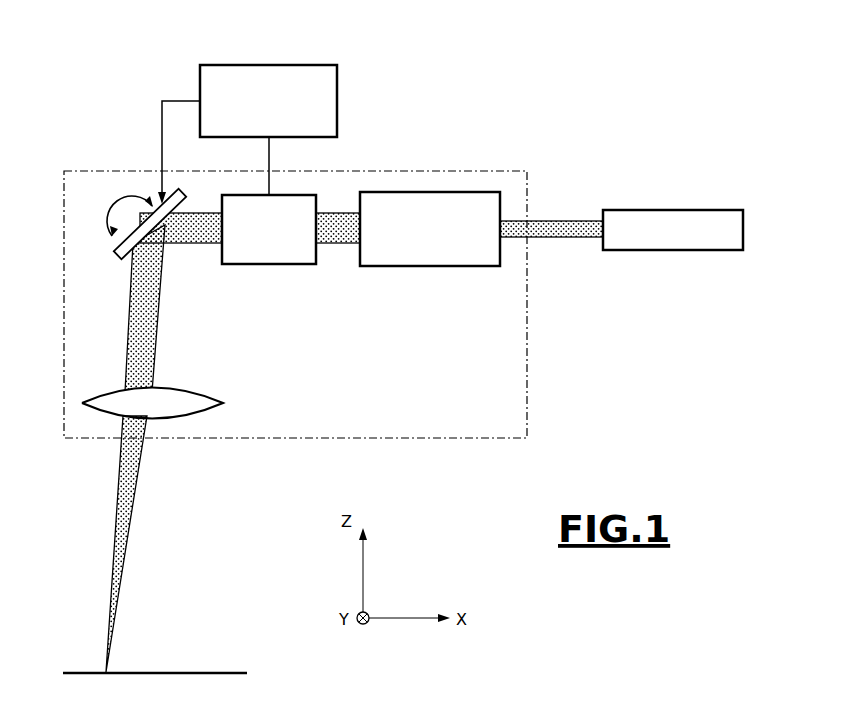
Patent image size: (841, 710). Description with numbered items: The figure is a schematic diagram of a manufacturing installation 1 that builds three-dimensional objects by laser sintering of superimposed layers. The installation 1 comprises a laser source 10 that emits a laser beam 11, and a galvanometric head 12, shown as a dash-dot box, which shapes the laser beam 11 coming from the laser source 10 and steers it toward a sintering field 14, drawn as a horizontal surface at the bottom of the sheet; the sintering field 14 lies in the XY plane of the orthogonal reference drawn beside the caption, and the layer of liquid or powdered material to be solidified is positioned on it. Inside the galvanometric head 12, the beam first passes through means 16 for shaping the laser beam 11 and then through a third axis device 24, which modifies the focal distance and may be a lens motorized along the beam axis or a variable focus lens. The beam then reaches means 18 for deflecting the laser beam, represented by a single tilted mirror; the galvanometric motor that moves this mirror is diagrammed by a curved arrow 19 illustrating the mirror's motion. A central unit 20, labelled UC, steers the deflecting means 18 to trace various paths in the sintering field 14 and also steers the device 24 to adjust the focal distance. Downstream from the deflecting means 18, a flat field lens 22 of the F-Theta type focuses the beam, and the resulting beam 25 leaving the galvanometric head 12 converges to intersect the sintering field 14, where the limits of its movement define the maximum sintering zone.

The manufacturing installation 1 is at (508, 143).
The laser source 10 is at (653, 210).
The laser beam 11 is at (545, 221).
The galvanometric head 12 is at (527, 373).
The sintering field 14 is at (185, 672).
The means for shaping the laser beam 16 is at (450, 267).
The means for deflecting the laser beam 18 is at (118, 246).
The rotation of mirror 19 is at (113, 200).
The central unit 20 is at (243, 64).
The flat field lens 22 is at (193, 390).
The third axis device 24 is at (272, 265).
The beam 25 is at (128, 560).